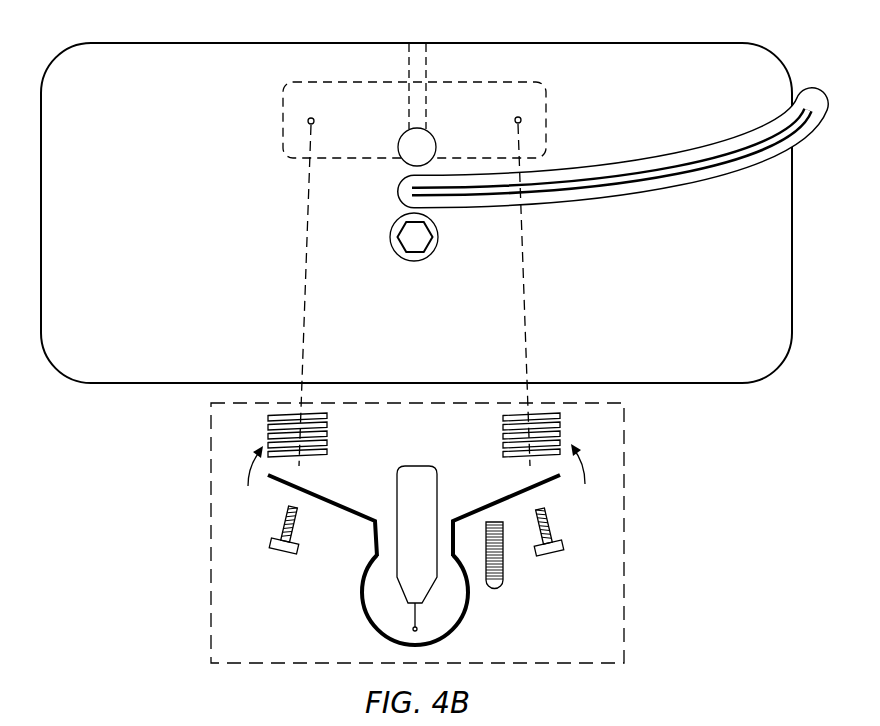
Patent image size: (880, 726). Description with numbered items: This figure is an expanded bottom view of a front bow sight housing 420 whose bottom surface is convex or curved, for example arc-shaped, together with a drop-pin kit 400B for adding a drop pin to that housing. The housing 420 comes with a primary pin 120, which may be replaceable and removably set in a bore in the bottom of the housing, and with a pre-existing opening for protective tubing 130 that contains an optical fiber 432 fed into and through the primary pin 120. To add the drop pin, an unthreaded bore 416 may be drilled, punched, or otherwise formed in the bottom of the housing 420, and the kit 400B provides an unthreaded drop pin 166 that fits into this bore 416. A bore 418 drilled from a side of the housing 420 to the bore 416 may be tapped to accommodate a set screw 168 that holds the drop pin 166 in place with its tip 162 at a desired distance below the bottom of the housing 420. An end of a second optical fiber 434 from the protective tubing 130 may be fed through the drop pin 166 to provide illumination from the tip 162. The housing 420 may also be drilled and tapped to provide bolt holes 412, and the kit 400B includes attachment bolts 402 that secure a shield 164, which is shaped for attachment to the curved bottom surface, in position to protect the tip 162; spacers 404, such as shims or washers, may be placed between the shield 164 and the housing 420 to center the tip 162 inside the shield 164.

The front bow sight housing 420 is at (135, 104).
The bolt holes 412 is at (330, 110).
The unthreaded bore 416 is at (416, 138).
The bore 418 is at (426, 63).
The primary pin 120 is at (417, 261).
The protective tubing 130 is at (605, 198).
The optical fiber 432 is at (709, 155).
The optical fiber 434 is at (695, 172).
The unthreaded drop pin 166 is at (397, 511).
The tip 162 is at (408, 636).
The shield 164 is at (457, 627).
The spacers 404 is at (418, 481).
The attachment bolts 402 is at (283, 557).
The set screw 168 is at (503, 560).
The drop-pin kit 400B is at (272, 656).